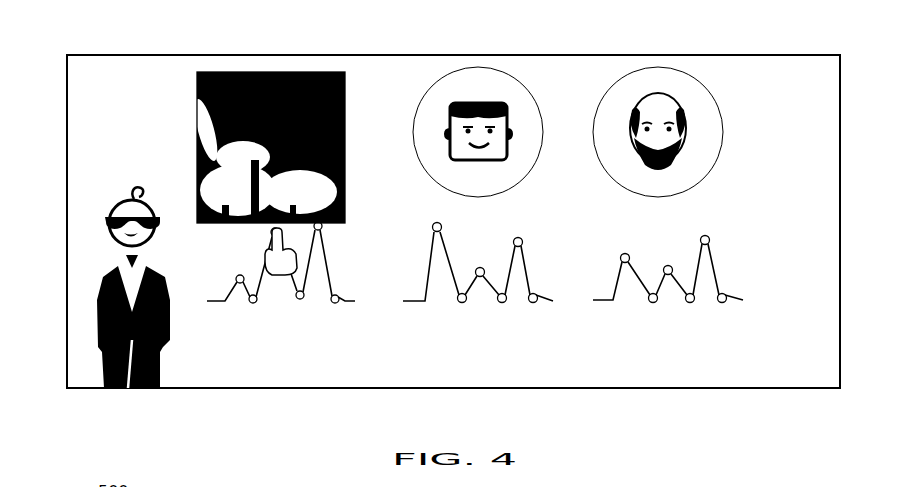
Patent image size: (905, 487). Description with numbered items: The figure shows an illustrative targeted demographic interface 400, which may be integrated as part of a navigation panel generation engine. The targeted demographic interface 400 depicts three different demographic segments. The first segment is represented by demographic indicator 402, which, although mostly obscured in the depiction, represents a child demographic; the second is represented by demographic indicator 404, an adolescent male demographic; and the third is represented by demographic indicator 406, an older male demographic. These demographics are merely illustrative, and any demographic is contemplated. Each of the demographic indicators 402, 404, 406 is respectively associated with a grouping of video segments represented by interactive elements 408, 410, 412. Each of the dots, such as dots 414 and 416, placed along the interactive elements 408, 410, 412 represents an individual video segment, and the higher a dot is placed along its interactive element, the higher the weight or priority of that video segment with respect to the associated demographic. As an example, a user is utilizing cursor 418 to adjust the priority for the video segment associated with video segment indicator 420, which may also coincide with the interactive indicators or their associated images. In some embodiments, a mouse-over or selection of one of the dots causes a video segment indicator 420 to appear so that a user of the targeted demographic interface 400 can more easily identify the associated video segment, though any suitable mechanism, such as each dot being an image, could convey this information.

The targeted demographic interface 400 is at (90, 43).
The demographic indicator 402 is at (261, 144).
The demographic indicator 404 is at (525, 85).
The demographic indicator 406 is at (702, 87).
The interactive element 408 is at (281, 287).
The interactive element 410 is at (432, 317).
The interactive element 412 is at (666, 282).
The dot 414 is at (709, 236).
The dot 416 is at (272, 234).
The cursor 418 is at (279, 276).
The video segment indicator 420 is at (197, 147).